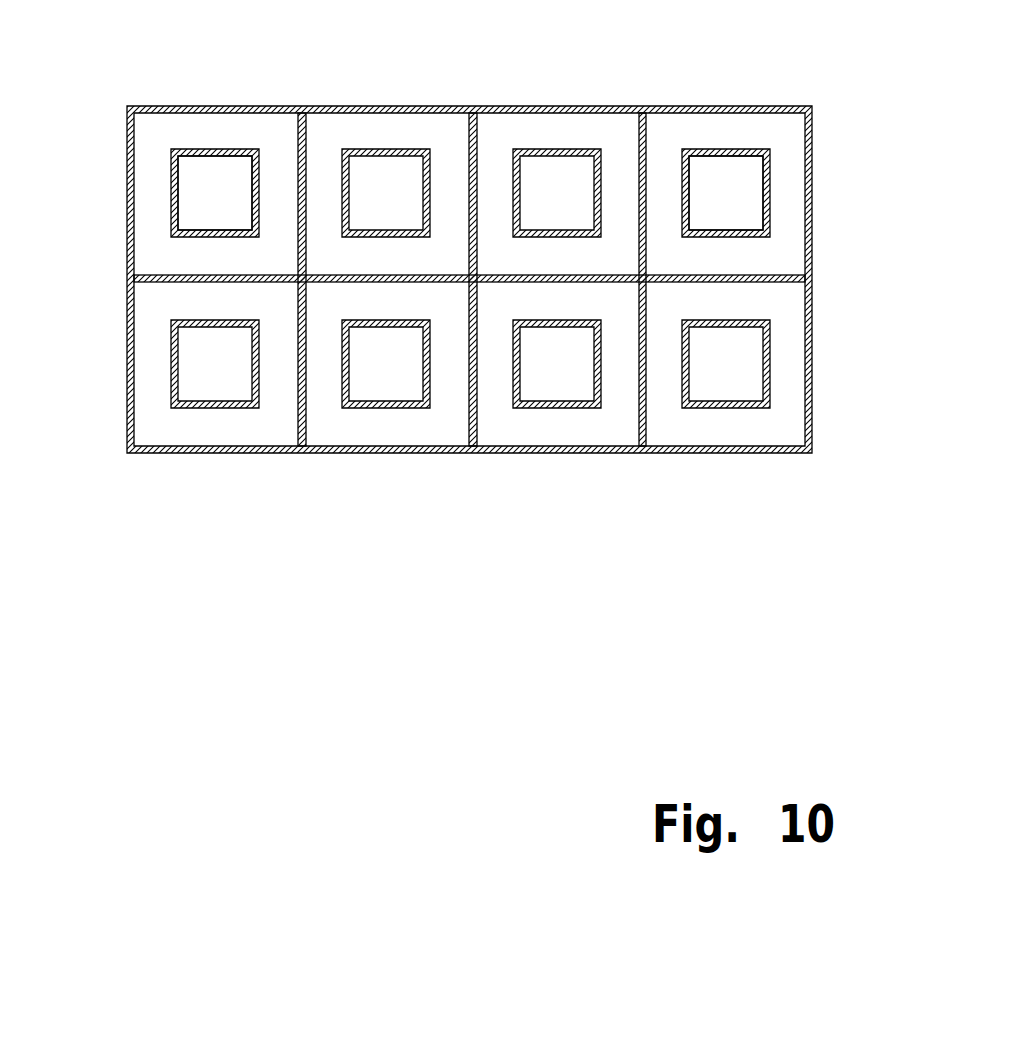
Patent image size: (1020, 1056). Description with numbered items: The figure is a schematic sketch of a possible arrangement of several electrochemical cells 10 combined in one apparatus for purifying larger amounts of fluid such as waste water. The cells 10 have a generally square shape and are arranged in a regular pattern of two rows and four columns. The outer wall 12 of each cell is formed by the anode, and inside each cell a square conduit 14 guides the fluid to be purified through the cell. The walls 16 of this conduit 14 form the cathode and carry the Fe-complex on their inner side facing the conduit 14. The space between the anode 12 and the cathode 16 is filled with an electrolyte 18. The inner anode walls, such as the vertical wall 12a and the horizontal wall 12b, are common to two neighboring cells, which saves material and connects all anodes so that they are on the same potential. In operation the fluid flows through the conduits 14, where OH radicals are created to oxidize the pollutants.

The electrochemical cell 10 is at (265, 128).
The outer wall 12 is at (798, 105).
The inner anode wall 12a is at (306, 170).
The inner anode wall 12b is at (183, 280).
The conduit 14 is at (203, 170).
The walls of the conduit 16 is at (174, 191).
The electrolyte 18 is at (148, 150).